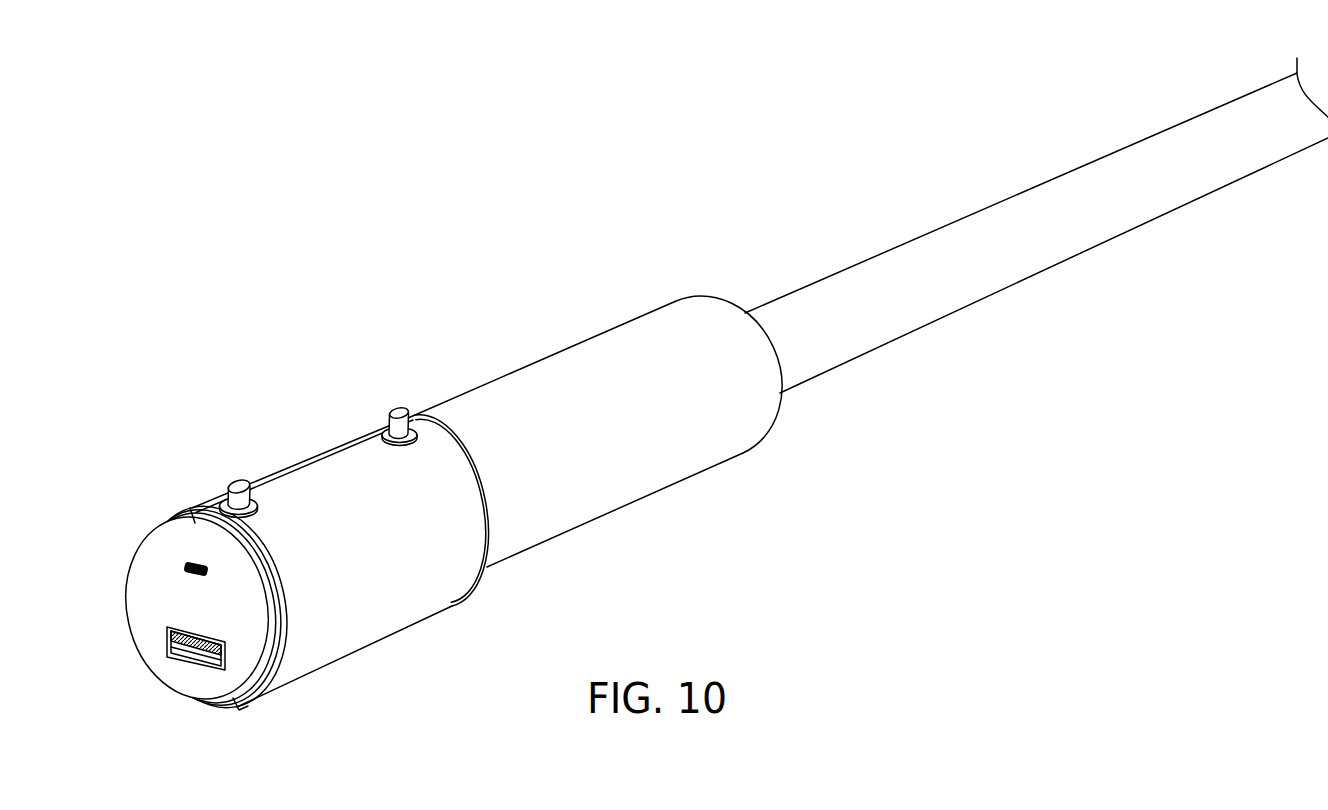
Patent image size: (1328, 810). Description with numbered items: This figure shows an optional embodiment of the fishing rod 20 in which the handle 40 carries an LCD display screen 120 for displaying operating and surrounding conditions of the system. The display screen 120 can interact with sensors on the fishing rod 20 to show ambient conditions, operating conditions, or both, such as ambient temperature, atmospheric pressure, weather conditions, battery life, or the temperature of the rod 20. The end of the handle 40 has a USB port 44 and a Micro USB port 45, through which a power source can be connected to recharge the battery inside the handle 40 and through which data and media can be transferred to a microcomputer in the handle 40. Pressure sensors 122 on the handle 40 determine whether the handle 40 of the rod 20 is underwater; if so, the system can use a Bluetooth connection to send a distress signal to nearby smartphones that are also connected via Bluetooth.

The rod 20 is at (963, 243).
The handle 40 is at (153, 560).
The USB port 44 is at (178, 657).
The Micro USB port 45 is at (185, 566).
The display screen 120 is at (338, 465).
The pressure sensors 122 is at (400, 412).